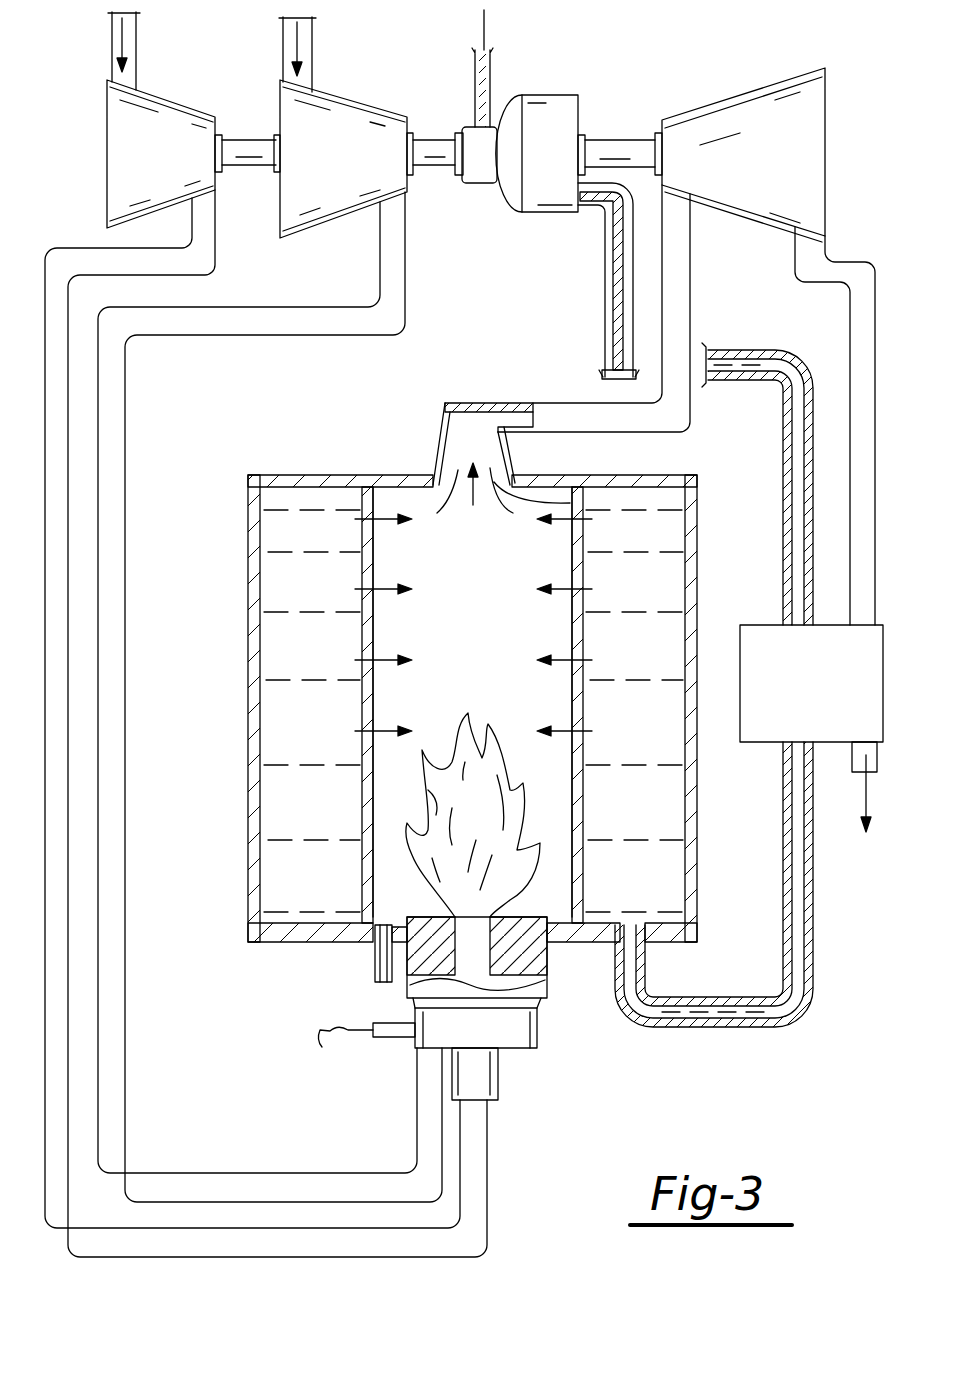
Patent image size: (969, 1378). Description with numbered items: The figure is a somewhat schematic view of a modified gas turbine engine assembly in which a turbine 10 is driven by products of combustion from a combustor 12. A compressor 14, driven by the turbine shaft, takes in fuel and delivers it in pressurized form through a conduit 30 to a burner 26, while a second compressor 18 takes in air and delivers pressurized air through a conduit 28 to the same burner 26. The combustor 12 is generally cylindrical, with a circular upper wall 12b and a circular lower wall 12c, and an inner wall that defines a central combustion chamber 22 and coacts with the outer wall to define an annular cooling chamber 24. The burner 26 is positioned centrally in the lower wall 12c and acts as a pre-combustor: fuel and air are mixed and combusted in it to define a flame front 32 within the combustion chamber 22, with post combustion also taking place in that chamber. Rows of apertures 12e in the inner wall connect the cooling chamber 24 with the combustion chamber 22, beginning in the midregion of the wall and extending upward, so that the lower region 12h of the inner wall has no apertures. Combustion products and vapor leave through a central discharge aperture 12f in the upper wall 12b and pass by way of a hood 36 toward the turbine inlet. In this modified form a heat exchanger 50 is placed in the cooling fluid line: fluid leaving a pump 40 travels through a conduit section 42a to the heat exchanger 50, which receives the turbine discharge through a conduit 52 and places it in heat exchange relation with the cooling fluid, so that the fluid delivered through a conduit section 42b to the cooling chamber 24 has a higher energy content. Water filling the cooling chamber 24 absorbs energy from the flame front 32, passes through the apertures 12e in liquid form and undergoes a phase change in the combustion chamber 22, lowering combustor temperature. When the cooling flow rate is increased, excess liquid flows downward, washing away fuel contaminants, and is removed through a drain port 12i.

The turbine 10 is at (750, 85).
The compressor 14 is at (367, 110).
The compressor 18 is at (177, 102).
The pump 40 is at (549, 90).
The conduit 28 is at (42, 378).
The conduit 30 is at (125, 540).
The hood 36 is at (438, 436).
The combustor 12 is at (236, 793).
The upper wall 12b is at (321, 475).
The lower wall 12c is at (318, 942).
The apertures 12e is at (362, 530).
The central discharge aperture 12f is at (578, 510).
The central combustion chamber 22 is at (480, 656).
The annular cooling chamber 24 is at (273, 718).
The flame front 32 is at (540, 832).
The lower region of inner wall 12h is at (562, 911).
The drain port 12i is at (373, 983).
The burner 26 is at (558, 1003).
The conduit section 42a is at (787, 392).
The conduit section 42b is at (815, 920).
The heat exchanger 50 is at (770, 742).
The conduit 52 is at (876, 518).